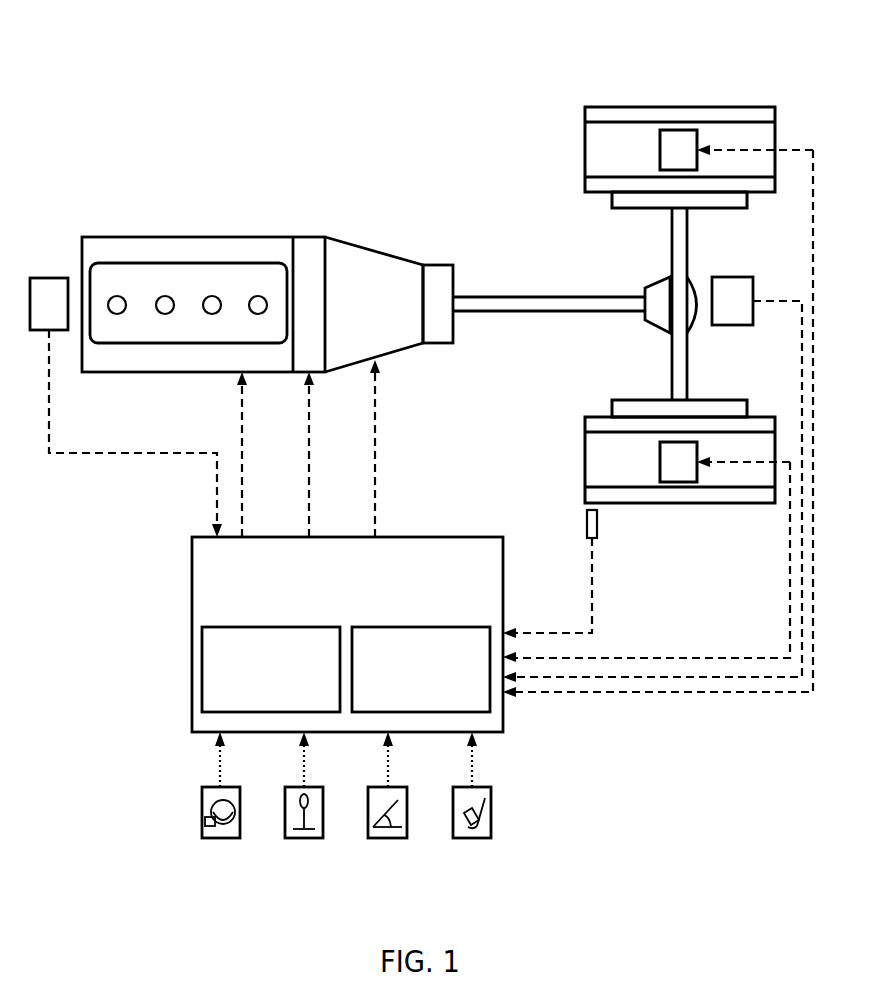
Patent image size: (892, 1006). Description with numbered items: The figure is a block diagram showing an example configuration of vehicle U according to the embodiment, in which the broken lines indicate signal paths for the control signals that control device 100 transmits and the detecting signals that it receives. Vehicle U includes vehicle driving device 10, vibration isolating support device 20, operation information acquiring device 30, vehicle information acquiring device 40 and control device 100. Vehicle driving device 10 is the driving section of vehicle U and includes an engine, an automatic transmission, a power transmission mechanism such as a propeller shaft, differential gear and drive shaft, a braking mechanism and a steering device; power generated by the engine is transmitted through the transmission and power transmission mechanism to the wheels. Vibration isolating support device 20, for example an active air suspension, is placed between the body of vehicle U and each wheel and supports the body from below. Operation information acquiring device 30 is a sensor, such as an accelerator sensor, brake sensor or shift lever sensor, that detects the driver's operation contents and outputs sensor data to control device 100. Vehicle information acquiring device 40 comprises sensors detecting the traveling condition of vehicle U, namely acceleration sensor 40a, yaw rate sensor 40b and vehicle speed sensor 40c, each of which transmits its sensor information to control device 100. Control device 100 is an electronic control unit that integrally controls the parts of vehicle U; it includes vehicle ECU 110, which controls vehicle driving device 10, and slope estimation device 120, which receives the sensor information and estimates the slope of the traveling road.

The vehicle U is at (58, 45).
The vehicle driving device 10 is at (99, 207).
The vibration isolating support device 20 is at (695, 130).
The operation information acquiring device 30 is at (178, 823).
The vehicle information acquiring device 40 is at (533, 166).
The acceleration sensor 40a is at (715, 277).
The yaw rate sensor 40b is at (49, 278).
The vehicle speed sensor 40c is at (586, 510).
The control device 100 is at (390, 639).
The vehicle ECU 110 is at (296, 627).
The slope estimation device 120 is at (440, 627).